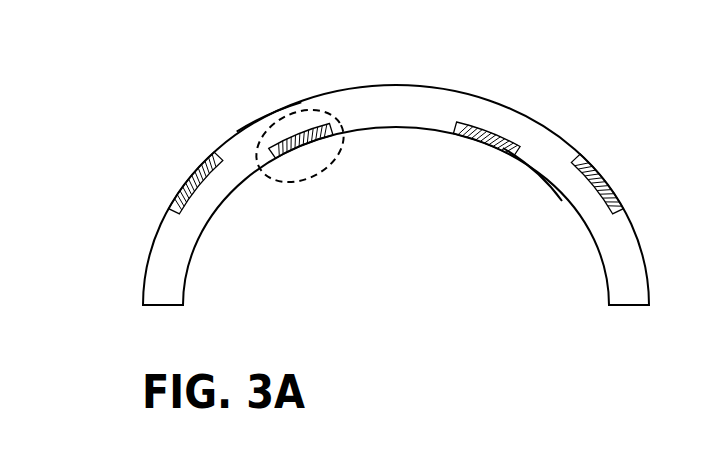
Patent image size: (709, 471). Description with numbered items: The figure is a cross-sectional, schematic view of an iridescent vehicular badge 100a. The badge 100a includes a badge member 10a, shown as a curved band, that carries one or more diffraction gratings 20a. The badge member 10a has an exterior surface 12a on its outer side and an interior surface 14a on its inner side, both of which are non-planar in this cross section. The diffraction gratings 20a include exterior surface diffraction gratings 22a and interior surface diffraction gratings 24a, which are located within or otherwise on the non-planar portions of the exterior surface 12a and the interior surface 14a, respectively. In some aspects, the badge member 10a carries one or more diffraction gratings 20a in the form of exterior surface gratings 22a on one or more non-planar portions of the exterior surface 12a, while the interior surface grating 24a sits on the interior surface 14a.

The iridescent vehicular badge 100a is at (126, 131).
The badge member 10a is at (157, 287).
The exterior surface 12a is at (261, 115).
The interior surface 14a is at (528, 175).
The diffraction gratings 20a is at (596, 156).
The exterior surface diffraction grating 22a is at (176, 179).
The interior surface diffraction grating 24a is at (318, 138).